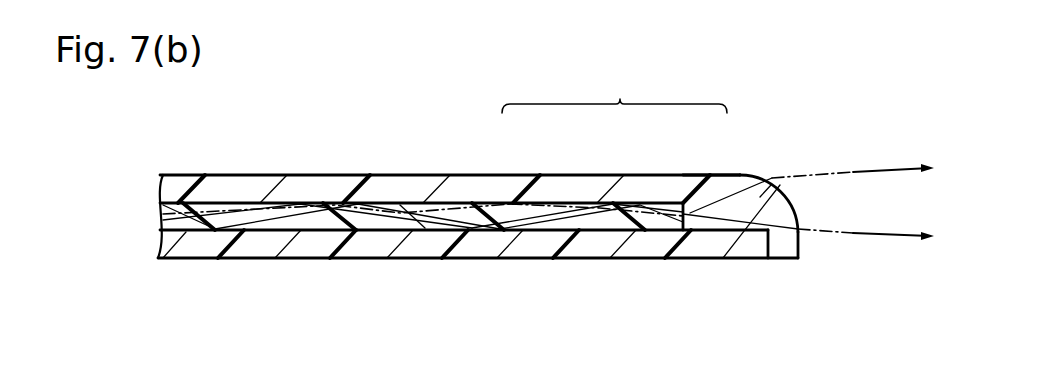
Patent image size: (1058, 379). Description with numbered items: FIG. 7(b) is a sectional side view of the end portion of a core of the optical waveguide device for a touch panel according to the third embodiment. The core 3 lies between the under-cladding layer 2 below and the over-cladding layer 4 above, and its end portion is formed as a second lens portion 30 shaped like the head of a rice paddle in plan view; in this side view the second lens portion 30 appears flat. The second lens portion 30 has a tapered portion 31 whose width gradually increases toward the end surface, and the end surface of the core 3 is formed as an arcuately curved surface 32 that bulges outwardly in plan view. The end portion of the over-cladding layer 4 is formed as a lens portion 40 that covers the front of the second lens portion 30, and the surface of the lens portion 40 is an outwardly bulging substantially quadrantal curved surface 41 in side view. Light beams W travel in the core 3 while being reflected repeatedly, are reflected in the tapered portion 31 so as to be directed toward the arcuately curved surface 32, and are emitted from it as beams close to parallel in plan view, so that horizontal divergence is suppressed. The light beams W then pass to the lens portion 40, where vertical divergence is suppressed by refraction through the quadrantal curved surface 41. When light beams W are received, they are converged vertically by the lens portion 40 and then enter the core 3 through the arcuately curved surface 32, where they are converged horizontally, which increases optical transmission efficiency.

The under-cladding layer 2 is at (253, 250).
The core 3 is at (423, 175).
The over-cladding layer 4 is at (450, 162).
The second lens portion 30 is at (614, 90).
The tapered portion 31 is at (563, 208).
The arcuately curved surface 32 is at (713, 203).
The lens portion 40 is at (758, 162).
The substantially quadrantal curved surface 41 is at (762, 197).
The light beams W is at (876, 170).